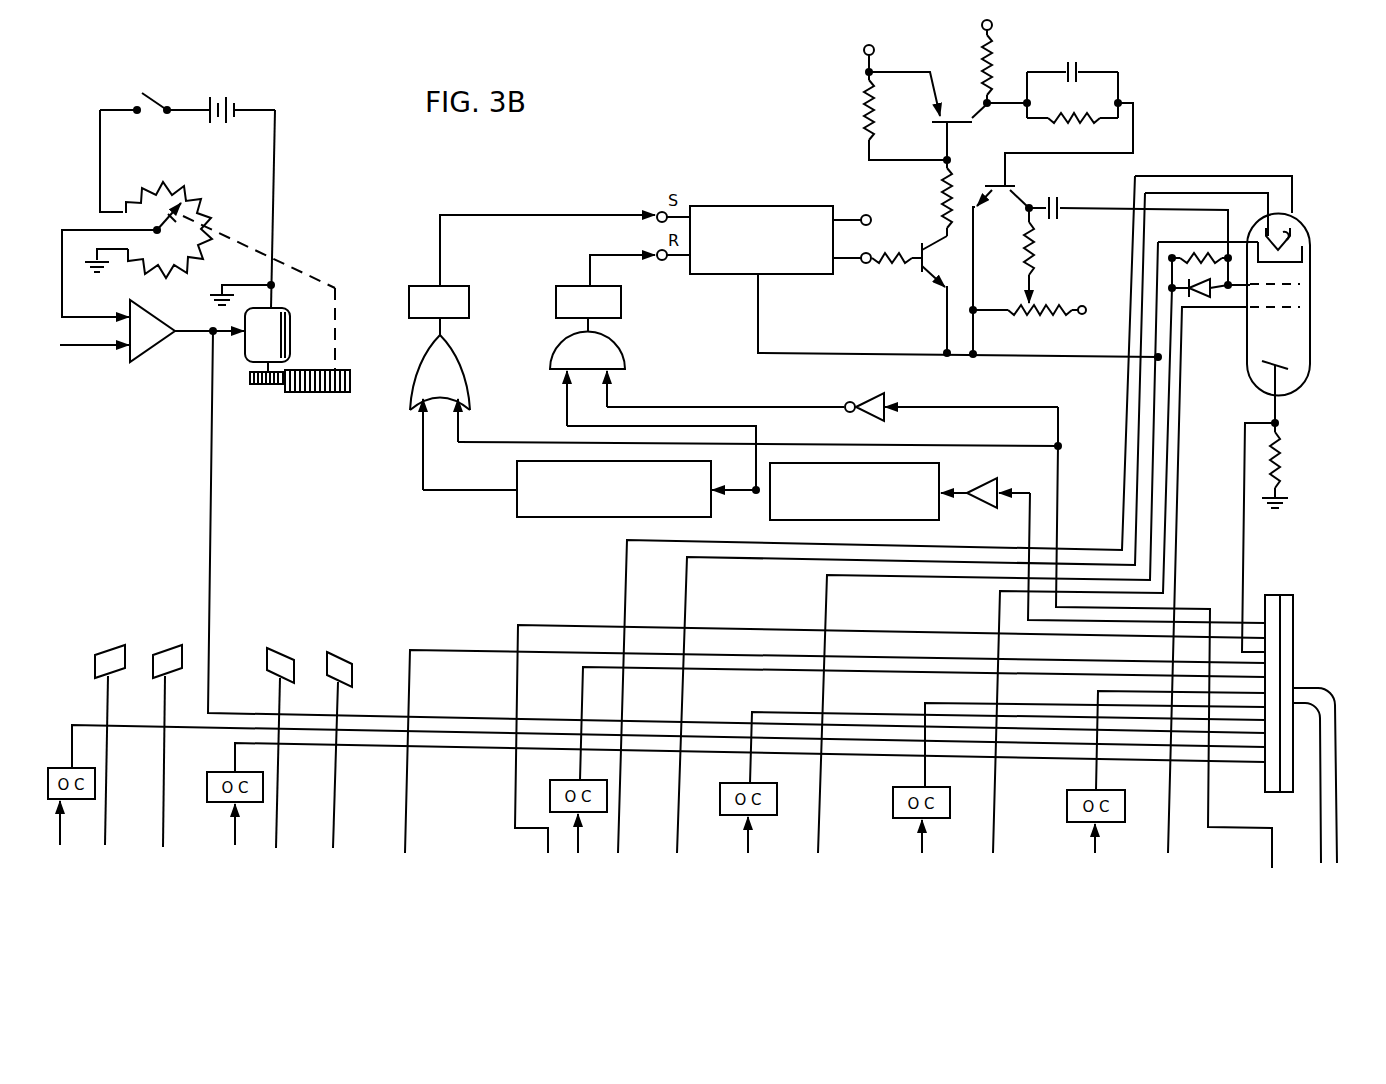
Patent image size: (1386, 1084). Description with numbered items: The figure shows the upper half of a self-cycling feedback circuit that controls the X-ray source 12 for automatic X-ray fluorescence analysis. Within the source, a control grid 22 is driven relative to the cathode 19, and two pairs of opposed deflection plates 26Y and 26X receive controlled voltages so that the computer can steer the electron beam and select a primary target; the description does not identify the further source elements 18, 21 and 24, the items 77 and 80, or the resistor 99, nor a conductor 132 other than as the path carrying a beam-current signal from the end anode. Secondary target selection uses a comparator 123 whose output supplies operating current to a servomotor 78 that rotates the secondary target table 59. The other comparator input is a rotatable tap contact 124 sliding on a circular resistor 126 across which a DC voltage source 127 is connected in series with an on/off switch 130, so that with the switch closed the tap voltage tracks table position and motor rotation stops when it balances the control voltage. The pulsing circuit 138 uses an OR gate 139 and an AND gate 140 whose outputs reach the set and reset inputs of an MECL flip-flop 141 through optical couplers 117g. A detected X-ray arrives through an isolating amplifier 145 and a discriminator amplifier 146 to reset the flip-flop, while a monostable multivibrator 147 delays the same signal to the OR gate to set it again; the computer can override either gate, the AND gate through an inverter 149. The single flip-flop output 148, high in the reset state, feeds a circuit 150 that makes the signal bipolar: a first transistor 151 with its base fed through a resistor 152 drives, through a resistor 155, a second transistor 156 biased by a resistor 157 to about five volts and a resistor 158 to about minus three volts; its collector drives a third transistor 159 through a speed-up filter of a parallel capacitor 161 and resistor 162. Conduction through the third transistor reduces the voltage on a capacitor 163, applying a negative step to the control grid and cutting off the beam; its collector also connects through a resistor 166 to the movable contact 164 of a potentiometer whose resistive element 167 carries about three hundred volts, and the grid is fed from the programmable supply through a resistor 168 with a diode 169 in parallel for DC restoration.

The X-ray source 12 is at (1284, 152).
The target electrode 18 is at (1290, 367).
The cathode 19 is at (1304, 259).
The cathode 21 is at (1300, 237).
The control grid 22 is at (1302, 287).
The storage mesh 24 is at (1302, 312).
The deflection plates 26X is at (100, 650).
The deflection plates 26Y is at (332, 654).
The secondary target table 59 is at (325, 390).
The pinion gear 77 is at (258, 387).
The servomotor 78 is at (287, 316).
The potentiometer wiper 80 is at (198, 192).
The target load resistor 99 is at (1282, 461).
The optical coupler 117g is at (470, 292).
The comparator 123 is at (165, 300).
The rotatable tap contact 124 is at (150, 194).
The circular resistor 126 is at (195, 222).
The DC voltage source 127 is at (236, 106).
The on/off switch 130 is at (154, 104).
The conductor 132 is at (1246, 548).
The pulsing circuit 138 is at (759, 214).
The OR gate 139 is at (464, 360).
The AND gate 140 is at (622, 352).
The MECL-type flip-flop 141 is at (800, 200).
The isolating amplifier 145 is at (989, 481).
The discriminator amplifier 146 is at (770, 513).
The monostable multivibrator 147 is at (517, 510).
The flip-flop output 148 is at (855, 266).
The inverter 149 is at (880, 398).
The amplifying circuit 150 is at (789, 70).
The first transistor 151 is at (922, 251).
The resistor 152 is at (895, 277).
The resistor 155 is at (940, 180).
The second transistor 156 is at (962, 104).
The resistor 157 is at (863, 108).
The resistor 158 is at (982, 50).
The third transistor 159 is at (1012, 186).
The capacitor 161 is at (1082, 68).
The resistor 162 is at (1072, 105).
The capacitor 163 is at (1062, 204).
The movable contact 164 is at (1037, 292).
The resistor 166 is at (1037, 246).
The resistive element 167 is at (1043, 322).
The resistor 168 is at (1205, 240).
The diode 169 is at (1203, 300).